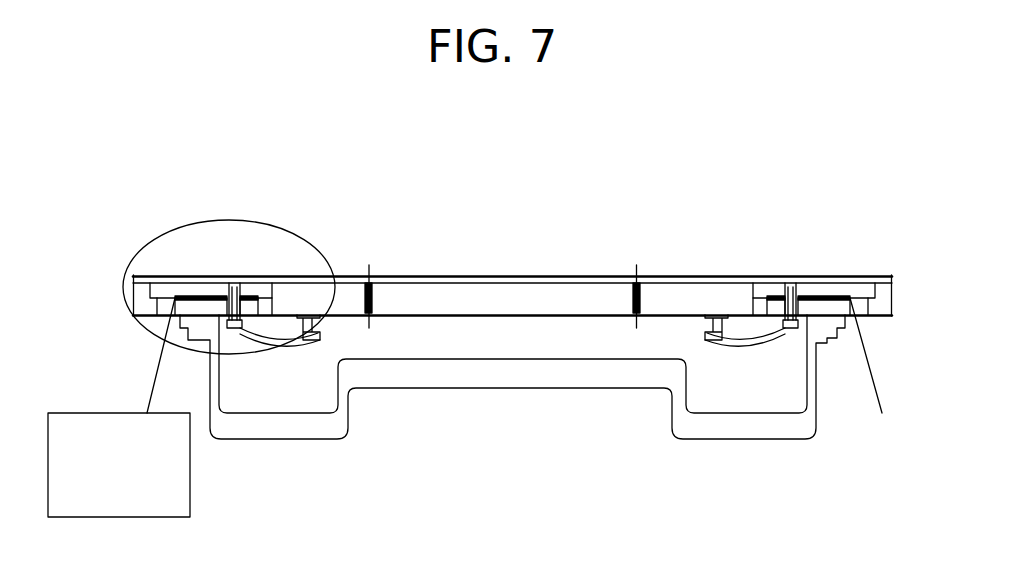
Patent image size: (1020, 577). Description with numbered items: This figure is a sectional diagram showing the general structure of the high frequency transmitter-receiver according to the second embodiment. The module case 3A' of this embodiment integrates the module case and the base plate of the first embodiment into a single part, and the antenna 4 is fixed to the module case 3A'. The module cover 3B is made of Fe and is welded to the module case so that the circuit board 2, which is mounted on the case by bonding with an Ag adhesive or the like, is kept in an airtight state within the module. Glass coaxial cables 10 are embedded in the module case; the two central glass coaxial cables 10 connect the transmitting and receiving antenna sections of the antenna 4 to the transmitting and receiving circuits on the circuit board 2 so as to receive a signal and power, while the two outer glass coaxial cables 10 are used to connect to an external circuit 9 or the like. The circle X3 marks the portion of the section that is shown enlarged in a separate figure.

The circuit board 2 is at (513, 312).
The module case 3A' is at (877, 269).
The module cover 3B is at (752, 428).
The antenna 4 is at (737, 282).
The external circuit 9 is at (190, 493).
The glass coaxial cables 10 is at (372, 293).
The circle X3 is at (231, 219).